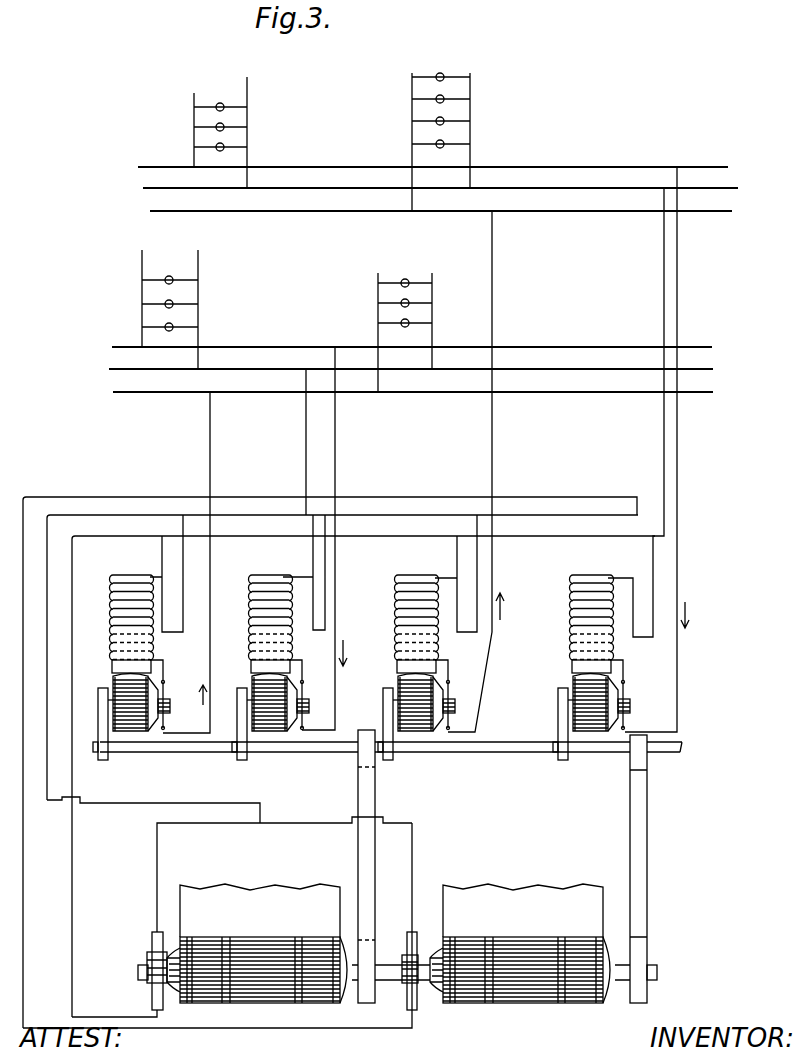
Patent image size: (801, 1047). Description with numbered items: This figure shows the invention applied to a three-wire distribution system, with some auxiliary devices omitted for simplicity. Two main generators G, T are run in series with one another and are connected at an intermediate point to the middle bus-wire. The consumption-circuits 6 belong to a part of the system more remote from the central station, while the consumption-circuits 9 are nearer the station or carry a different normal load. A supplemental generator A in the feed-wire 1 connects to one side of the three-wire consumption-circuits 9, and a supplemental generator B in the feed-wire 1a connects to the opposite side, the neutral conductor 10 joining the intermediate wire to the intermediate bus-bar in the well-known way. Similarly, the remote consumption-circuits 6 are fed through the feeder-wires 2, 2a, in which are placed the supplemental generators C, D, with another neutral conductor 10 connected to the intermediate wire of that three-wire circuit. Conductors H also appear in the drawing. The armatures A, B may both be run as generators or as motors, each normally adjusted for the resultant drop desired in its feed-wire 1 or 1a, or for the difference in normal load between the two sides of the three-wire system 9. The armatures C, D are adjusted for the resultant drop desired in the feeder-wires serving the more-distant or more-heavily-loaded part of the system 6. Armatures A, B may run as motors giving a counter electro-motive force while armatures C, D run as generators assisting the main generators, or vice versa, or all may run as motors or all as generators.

The consumption-circuits 6 is at (438, 177).
The consumption-circuits 9 is at (411, 359).
The feed-wire 1 is at (186, 562).
The feed-wire 1a is at (328, 538).
The feeder-wire 2 is at (497, 446).
The feeder-wire 2a is at (664, 449).
The neutral conductor 10 is at (663, 443).
The common conductors H is at (588, 497).
The supplemental generator A is at (133, 725).
The supplemental generator B is at (275, 725).
The supplemental generator C is at (425, 735).
The supplemental generator D is at (593, 735).
The generator G is at (268, 993).
The generator T is at (533, 995).